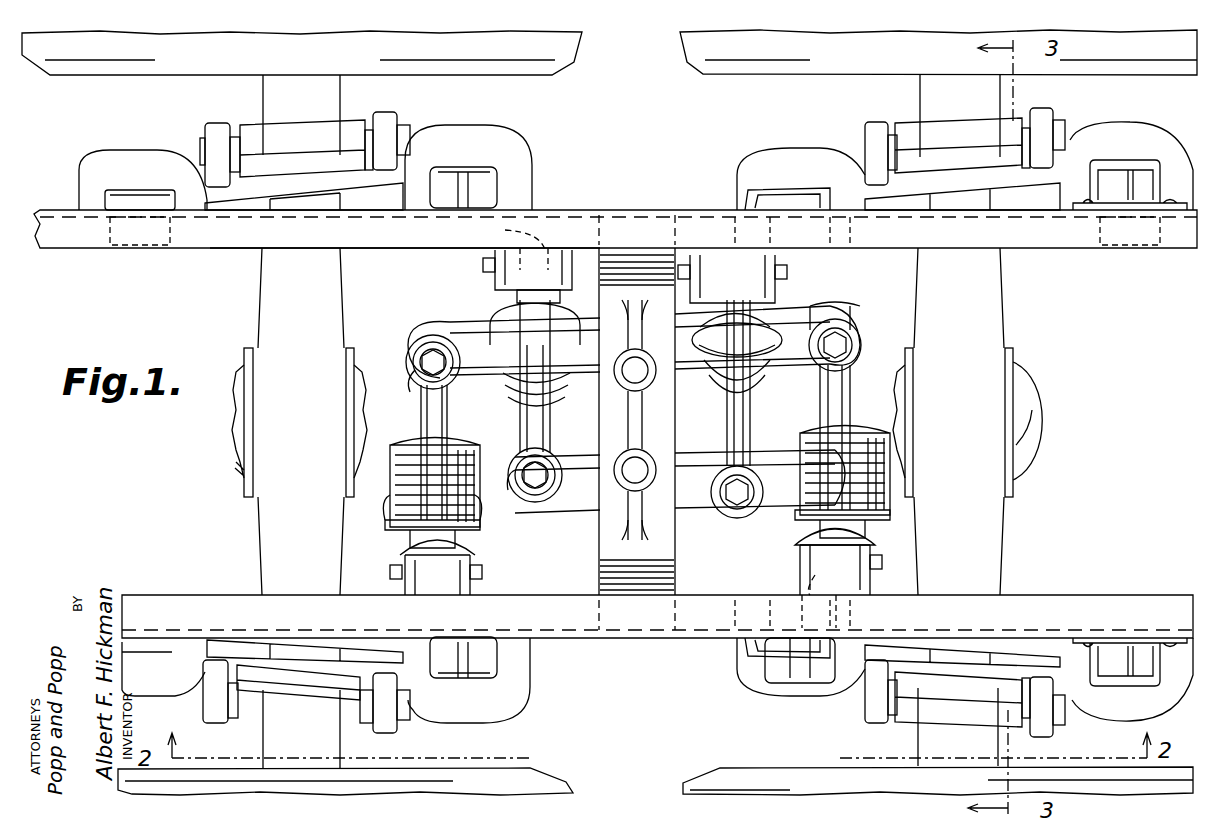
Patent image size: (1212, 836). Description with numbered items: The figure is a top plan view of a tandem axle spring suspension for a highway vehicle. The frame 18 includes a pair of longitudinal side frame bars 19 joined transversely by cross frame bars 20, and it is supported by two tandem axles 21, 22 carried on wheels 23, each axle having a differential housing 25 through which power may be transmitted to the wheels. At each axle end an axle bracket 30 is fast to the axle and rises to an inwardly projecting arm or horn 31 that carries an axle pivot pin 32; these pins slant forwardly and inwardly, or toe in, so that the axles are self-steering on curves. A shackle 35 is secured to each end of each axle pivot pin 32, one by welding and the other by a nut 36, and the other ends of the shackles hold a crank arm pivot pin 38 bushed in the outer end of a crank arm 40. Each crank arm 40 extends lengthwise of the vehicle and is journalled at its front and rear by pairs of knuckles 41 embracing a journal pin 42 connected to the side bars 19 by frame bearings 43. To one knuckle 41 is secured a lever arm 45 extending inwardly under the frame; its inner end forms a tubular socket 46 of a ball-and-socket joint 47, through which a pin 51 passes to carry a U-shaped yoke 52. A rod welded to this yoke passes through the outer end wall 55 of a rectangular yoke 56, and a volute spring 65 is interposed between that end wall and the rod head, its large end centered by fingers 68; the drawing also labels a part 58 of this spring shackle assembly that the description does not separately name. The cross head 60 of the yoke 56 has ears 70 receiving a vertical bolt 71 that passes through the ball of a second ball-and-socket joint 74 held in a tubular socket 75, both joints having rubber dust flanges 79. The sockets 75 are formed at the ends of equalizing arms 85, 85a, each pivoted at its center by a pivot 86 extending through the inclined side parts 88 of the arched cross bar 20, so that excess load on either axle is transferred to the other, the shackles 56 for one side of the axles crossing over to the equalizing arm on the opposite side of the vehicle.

The frame 18 is at (617, 206).
The longitudinal side frame bars 19 is at (48, 210).
The cross frame bars 20 is at (637, 422).
The tandem axle 21 is at (301, 421).
The tandem axle 22 is at (959, 421).
The wheels 23 is at (567, 47).
The differential housing 25 is at (242, 430).
The axle bracket 30 is at (301, 422).
The arm or horn 31 is at (959, 420).
The axle pivot pin 32 is at (205, 162).
The shackle 35 is at (384, 114).
The nut 36 is at (417, 690).
The crank arm pivot pin 38 is at (1083, 728).
The crank arm 40 is at (497, 132).
The knuckles 41 is at (425, 180).
The journal pin 42 is at (538, 190).
The frame bearings 43 is at (150, 200).
The lever arm 45 is at (540, 258).
The tubular socket 46 is at (587, 425).
The ball-and-socket joint 47 is at (480, 270).
The pin 51 is at (485, 573).
The U-shaped yoke 52 is at (495, 290).
The outer end wall 55 is at (470, 522).
The rectangular frame or yoke 56 is at (413, 416).
The link 58 is at (528, 420).
The cross head 60 is at (838, 375).
The volute spring 65 is at (460, 463).
The fingers 68 is at (386, 505).
The ears 70 is at (415, 377).
The vertical bolt 71 is at (850, 340).
The ball-and-socket joint 74 is at (396, 333).
The tubular socket 75 is at (852, 312).
The rubber disks or flanges 79 is at (432, 346).
The equalizing arm 85 is at (795, 318).
The equalizing arm 85a is at (690, 520).
The pivot 86 is at (632, 468).
The inclined side parts 88 is at (640, 415).